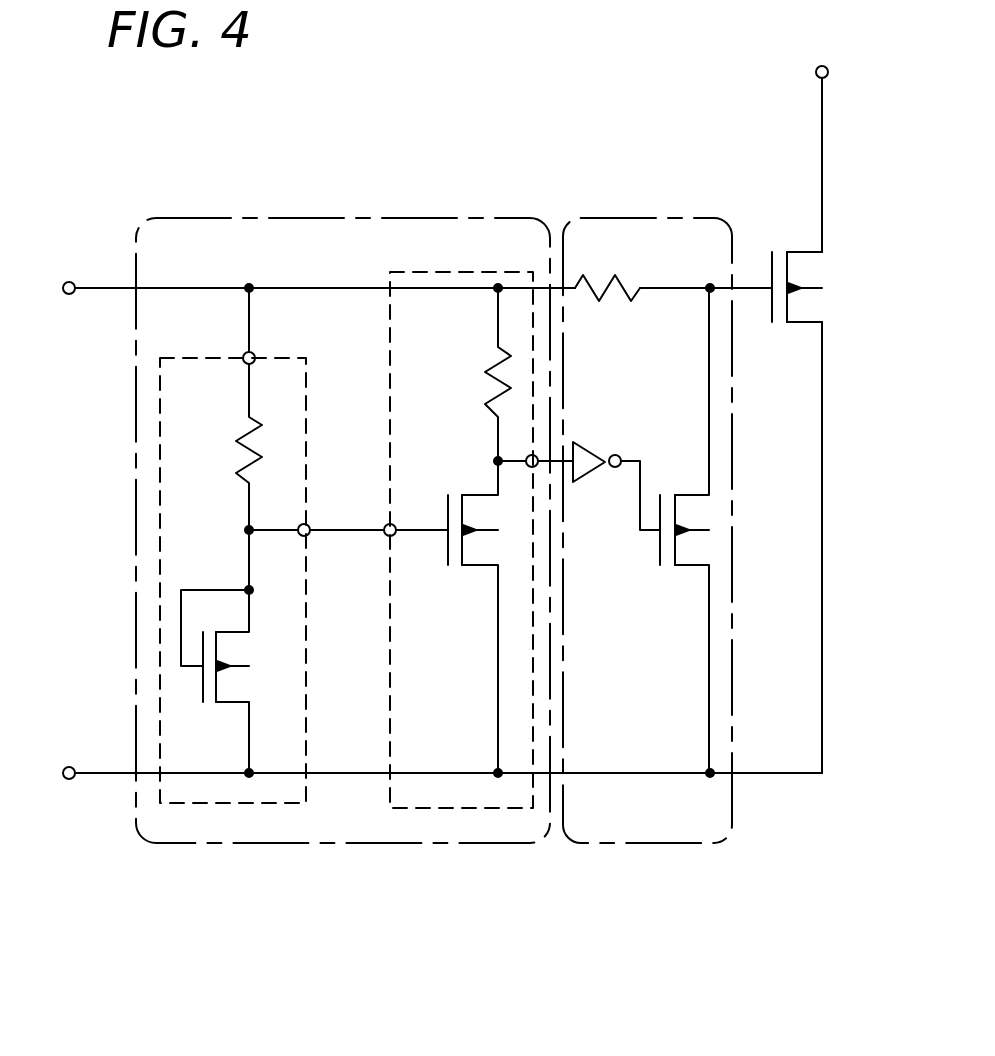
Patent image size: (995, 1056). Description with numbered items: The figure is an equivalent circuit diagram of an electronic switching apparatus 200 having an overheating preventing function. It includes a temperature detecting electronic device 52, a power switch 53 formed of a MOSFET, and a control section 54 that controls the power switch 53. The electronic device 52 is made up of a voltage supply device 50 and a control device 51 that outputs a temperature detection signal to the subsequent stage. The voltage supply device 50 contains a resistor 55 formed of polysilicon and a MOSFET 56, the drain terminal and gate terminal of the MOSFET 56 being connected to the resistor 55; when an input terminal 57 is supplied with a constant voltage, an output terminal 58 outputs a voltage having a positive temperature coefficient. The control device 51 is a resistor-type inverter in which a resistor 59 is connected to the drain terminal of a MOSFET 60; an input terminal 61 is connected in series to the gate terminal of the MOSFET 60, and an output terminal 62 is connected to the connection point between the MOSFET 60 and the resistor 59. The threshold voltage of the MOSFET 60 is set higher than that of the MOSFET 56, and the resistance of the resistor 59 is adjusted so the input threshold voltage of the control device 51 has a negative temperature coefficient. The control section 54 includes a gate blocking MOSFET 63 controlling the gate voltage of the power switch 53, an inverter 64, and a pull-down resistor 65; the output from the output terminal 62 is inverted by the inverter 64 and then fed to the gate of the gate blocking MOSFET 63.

The electronic switching apparatus 200 is at (790, 900).
The voltage supply device 50 is at (192, 803).
The control device 51 is at (420, 808).
The electronic device 52 is at (227, 218).
The power switch 53 is at (807, 272).
The control section 54 is at (620, 843).
The resistor 55 is at (236, 438).
The MOSFET 56 is at (203, 688).
The input terminal 57 is at (245, 354).
The output terminal 58 is at (299, 524).
The resistor 59 is at (490, 356).
The MOSFET 60 is at (510, 533).
The input terminal 61 is at (386, 536).
The output terminal 62 is at (536, 456).
The gate blocking MOSFET 63 is at (703, 512).
The inverter 64 is at (597, 443).
The pull-down resistor 65 is at (628, 267).